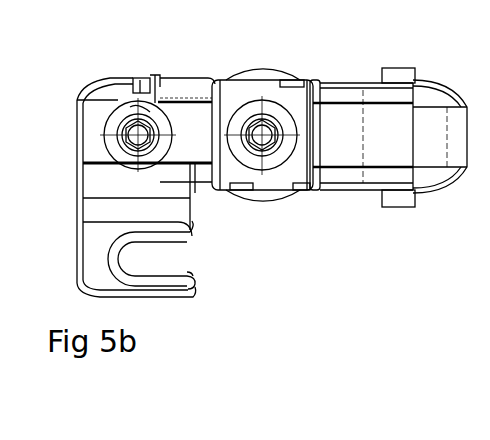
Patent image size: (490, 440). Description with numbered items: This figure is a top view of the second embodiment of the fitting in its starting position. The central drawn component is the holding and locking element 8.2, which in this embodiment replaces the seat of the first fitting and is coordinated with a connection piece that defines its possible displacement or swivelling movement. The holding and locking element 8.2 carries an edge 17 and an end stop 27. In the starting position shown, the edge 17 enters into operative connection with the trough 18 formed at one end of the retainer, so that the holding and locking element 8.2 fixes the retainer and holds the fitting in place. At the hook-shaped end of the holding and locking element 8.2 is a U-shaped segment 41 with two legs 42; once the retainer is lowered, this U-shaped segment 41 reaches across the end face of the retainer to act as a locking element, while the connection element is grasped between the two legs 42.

The edge 17 is at (143, 83).
The trough 18 is at (163, 83).
The holding and locking element 8.2 is at (175, 188).
The end stop 27 is at (113, 260).
The U-shaped segment 41 is at (204, 297).
The legs 42 is at (167, 293).